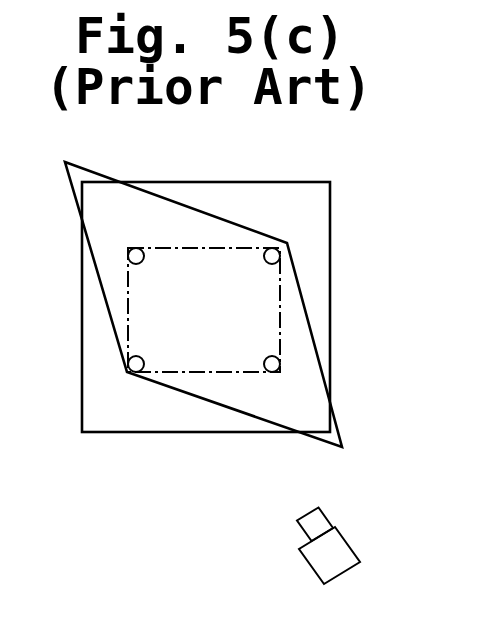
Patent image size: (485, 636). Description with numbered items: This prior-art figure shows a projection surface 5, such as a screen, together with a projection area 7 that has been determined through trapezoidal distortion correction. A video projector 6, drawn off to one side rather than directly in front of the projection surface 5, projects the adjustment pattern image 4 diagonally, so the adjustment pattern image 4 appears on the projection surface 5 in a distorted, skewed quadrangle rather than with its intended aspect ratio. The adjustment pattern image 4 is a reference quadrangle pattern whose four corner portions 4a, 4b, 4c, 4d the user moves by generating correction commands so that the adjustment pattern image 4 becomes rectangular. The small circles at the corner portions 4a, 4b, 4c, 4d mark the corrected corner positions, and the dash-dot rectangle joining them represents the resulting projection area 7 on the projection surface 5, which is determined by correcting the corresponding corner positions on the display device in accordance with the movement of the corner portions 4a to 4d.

The adjustment pattern image 4 is at (170, 200).
The corner portion of the adjustment pattern image 4a is at (128, 255).
The corner portion of the adjustment pattern image 4b is at (136, 356).
The corner portion of the adjustment pattern image 4c is at (276, 264).
The corner portion of the adjustment pattern image 4d is at (275, 357).
The projection surface 5 is at (282, 182).
The video projector 6 is at (337, 570).
The projection area 7 is at (204, 363).